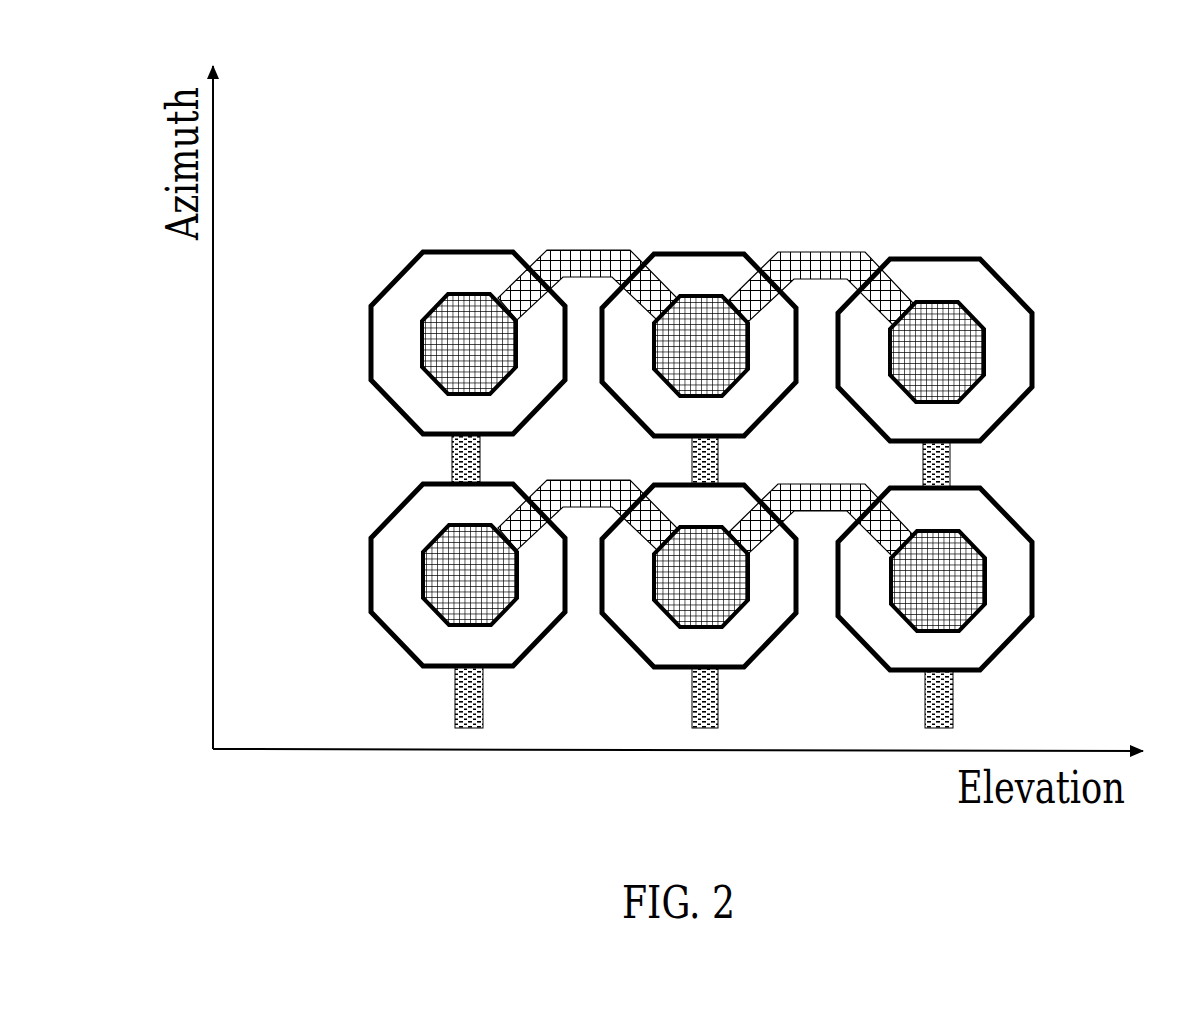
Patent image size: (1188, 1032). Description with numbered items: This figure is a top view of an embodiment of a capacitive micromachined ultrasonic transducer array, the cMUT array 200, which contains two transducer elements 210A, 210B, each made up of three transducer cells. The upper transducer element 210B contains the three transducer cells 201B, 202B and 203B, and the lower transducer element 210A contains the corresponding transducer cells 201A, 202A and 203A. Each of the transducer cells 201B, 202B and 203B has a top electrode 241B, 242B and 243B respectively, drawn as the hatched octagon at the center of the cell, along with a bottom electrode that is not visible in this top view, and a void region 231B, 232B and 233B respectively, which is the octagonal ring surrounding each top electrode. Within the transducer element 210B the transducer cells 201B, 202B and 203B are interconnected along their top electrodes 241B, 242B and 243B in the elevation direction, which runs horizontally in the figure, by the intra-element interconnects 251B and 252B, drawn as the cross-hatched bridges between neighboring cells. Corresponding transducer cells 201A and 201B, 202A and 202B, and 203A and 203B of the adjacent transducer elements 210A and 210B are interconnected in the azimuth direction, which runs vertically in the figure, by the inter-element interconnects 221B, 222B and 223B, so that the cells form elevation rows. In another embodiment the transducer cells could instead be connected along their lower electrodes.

The cMUT array 200 is at (1022, 173).
The transducer element 210A is at (1030, 480).
The transducer element 210B is at (1022, 248).
The transducer cell 201A is at (383, 645).
The transducer cell 202A is at (617, 645).
The transducer cell 203A is at (848, 648).
The transducer cell 201B is at (413, 243).
The transducer cell 202B is at (645, 242).
The transducer cell 203B is at (888, 253).
The inter-element interconnect 221B is at (452, 452).
The inter-element interconnect 222B is at (695, 462).
The inter-element interconnect 223B is at (925, 462).
The void region 231B is at (398, 359).
The void region 232B is at (667, 278).
The void region 233B is at (905, 280).
The top electrode 241B is at (437, 312).
The top electrode 242B is at (703, 300).
The top electrode 243B is at (950, 300).
The intra-element interconnect 251B is at (570, 250).
The intra-element interconnect 252B is at (823, 270).